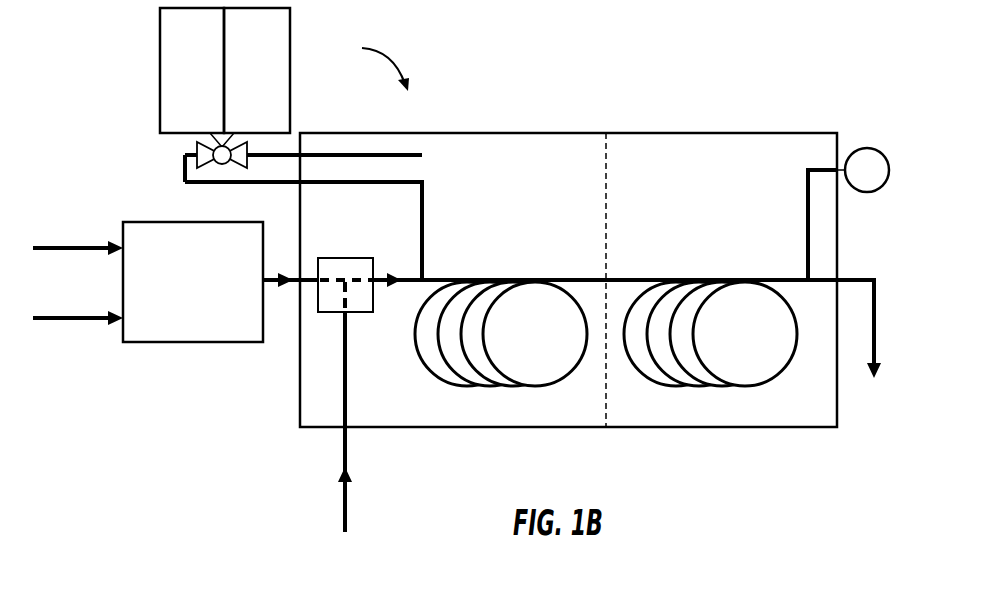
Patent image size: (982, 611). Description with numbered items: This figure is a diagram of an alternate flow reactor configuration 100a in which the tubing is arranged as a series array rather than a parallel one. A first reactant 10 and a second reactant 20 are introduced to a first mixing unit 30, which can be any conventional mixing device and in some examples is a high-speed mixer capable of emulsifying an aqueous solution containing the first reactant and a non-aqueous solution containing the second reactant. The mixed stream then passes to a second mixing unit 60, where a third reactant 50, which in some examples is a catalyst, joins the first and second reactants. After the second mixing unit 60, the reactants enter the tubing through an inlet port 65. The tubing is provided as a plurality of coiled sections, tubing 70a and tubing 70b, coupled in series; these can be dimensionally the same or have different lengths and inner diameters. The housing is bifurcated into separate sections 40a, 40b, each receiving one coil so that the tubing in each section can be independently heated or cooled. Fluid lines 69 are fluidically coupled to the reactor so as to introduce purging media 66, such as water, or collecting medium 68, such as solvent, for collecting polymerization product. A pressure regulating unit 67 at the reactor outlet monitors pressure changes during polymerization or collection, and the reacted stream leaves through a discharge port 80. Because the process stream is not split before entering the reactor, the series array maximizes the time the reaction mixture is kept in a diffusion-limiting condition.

The alternate flow reactor configuration 100a is at (361, 61).
The first reactant 10 is at (73, 246).
The second reactant 20 is at (67, 321).
The first mixing unit 30 is at (180, 296).
The housing section 40a is at (479, 212).
The housing section 40b is at (674, 212).
The third reactant 50 is at (347, 490).
The second mixing unit 60 is at (350, 257).
The inlet port 65 is at (380, 277).
The purging media 66 is at (176, 77).
The pressure regulating unit 67 is at (867, 147).
The collecting medium 68 is at (241, 77).
The fluid lines 69 is at (424, 247).
The tubing 70a is at (538, 278).
The tubing 70b is at (740, 280).
The discharge port 80 is at (857, 278).